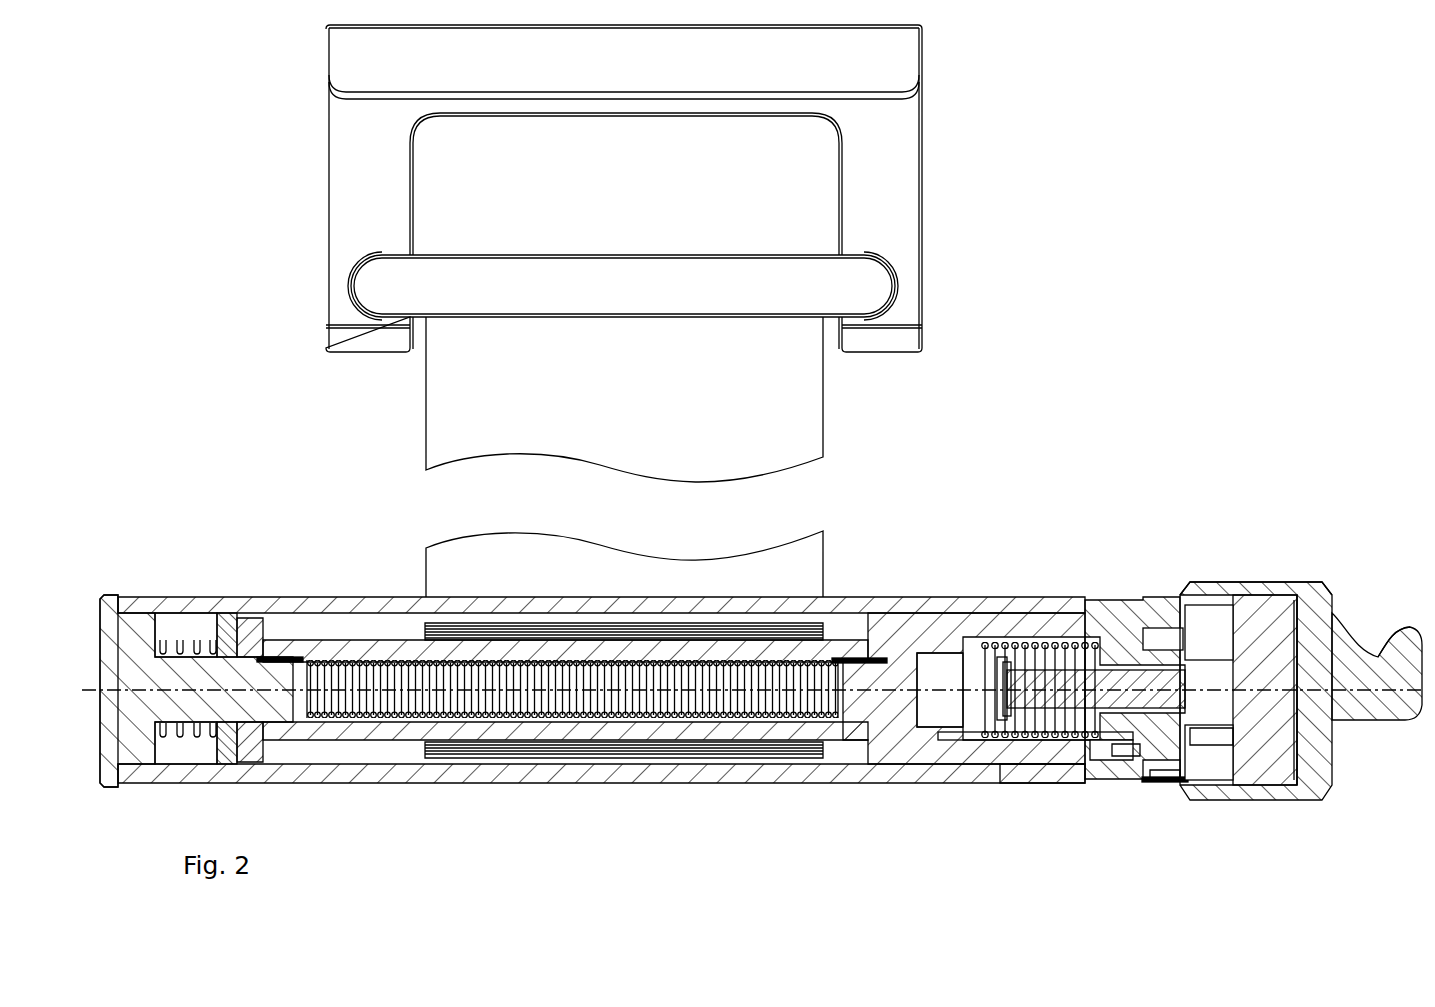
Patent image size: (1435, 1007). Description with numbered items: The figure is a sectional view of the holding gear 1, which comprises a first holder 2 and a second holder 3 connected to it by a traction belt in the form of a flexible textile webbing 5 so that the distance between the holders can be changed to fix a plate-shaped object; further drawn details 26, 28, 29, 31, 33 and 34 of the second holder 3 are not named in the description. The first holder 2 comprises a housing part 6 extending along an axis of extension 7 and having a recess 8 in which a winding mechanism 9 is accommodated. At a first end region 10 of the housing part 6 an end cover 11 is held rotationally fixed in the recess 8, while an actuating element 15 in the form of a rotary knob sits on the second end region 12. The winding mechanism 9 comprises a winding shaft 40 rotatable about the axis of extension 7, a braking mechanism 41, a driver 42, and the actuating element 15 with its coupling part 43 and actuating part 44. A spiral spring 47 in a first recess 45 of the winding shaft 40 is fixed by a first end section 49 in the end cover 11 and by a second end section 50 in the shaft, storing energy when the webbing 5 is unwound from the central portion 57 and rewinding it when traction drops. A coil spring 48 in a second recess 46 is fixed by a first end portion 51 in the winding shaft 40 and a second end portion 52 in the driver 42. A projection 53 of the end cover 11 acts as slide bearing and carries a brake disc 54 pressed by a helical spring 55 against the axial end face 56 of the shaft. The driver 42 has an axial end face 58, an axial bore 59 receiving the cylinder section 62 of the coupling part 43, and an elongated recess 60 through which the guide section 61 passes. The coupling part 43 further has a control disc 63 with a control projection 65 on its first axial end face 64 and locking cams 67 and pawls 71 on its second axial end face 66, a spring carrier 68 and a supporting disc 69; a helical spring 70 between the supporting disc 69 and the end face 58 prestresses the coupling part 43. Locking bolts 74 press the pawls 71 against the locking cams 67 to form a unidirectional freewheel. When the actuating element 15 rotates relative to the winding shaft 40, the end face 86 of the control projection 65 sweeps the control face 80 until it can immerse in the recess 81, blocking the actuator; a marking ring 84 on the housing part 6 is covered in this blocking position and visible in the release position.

The holding gear 1 is at (152, 168).
The first holder 2 is at (424, 796).
The second holder 3 is at (942, 167).
The flexible textile webbing 5 is at (806, 425).
The housing part 6 is at (1044, 784).
The axis of extension 7 is at (137, 693).
The recess 8 is at (360, 626).
The winding mechanism 9 is at (896, 755).
The first end region 10 is at (175, 596).
The end cover 11 is at (113, 645).
The second end region 12 is at (1131, 600).
The actuating element 15 is at (1343, 607).
The upper bar 26 is at (352, 67).
The rear wall 28 is at (905, 62).
The side wall 29 is at (338, 125).
The window 31 is at (386, 190).
The leg 33 is at (340, 318).
The cross bar 34 is at (866, 286).
The winding shaft 40 is at (548, 732).
The braking mechanism 41 is at (182, 750).
The driver 42 is at (1172, 782).
The coupling part 43 is at (1277, 598).
The actuating part 44 is at (1274, 707).
The first recess 45 is at (300, 712).
The second recess 46 is at (943, 653).
The spiral spring 47 is at (654, 702).
The coil spring 48 is at (1040, 644).
The first end section 49 is at (277, 656).
The second end section 50 is at (881, 658).
The first end portion 51 is at (957, 741).
The second end portion 52 is at (1126, 746).
The projection 53 is at (263, 718).
The brake disc 54 is at (228, 630).
The helical spring 55 is at (160, 640).
The axial end face 56 is at (235, 746).
The central portion 57 is at (847, 741).
The axial end face 58 is at (1100, 656).
The axial bore 59 is at (1160, 640).
The recess 60 is at (1150, 776).
The guide section 61 is at (1102, 744).
The cylinder section 62 is at (1232, 765).
The control disc 63 is at (1300, 766).
The first axial end face 64 is at (1257, 640).
The control projection 65 is at (1262, 776).
The second axial end face 66 is at (1298, 615).
The locking cams 67 is at (1297, 677).
The spring carrier 68 is at (1023, 672).
The supporting disc 69 is at (1000, 656).
The helical spring 70 is at (1038, 742).
The pawls 71 is at (1298, 645).
The locking bolts 74 is at (1268, 762).
The control face 80 is at (1258, 790).
The recess 81 is at (1235, 630).
The marking ring 84 is at (1165, 782).
The end face 86 is at (1214, 770).